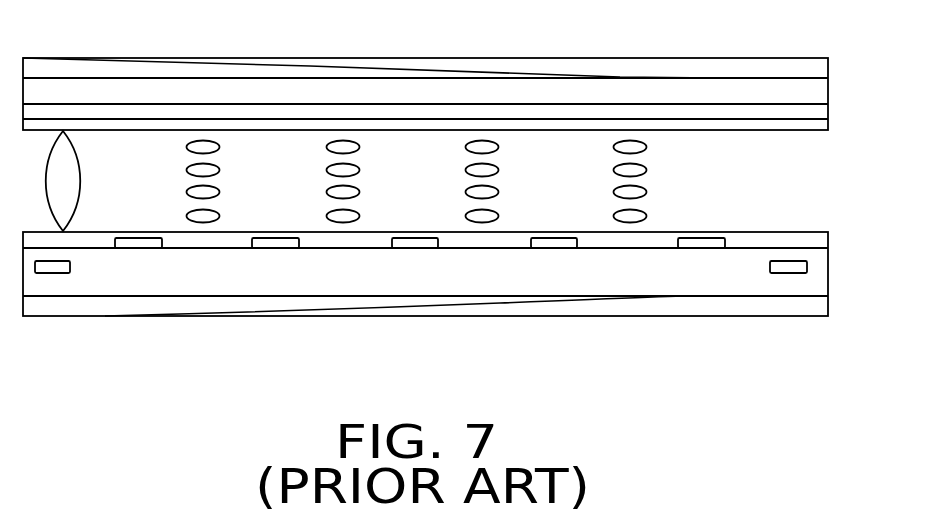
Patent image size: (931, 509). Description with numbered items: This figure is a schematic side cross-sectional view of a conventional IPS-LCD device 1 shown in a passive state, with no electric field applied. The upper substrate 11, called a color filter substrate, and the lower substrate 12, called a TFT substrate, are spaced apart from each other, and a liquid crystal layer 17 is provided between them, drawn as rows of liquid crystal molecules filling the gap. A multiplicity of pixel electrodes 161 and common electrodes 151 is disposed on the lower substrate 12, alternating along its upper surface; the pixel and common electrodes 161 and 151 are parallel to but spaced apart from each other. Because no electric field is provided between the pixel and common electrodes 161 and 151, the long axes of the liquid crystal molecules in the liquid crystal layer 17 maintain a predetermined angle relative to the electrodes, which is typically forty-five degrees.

The IPS-LCD device 1 is at (367, 52).
The upper substrate 11 is at (807, 91).
The lower substrate 12 is at (817, 274).
The liquid crystal layer 17 is at (636, 166).
The common electrodes 151 is at (137, 240).
The pixel electrodes 161 is at (273, 240).